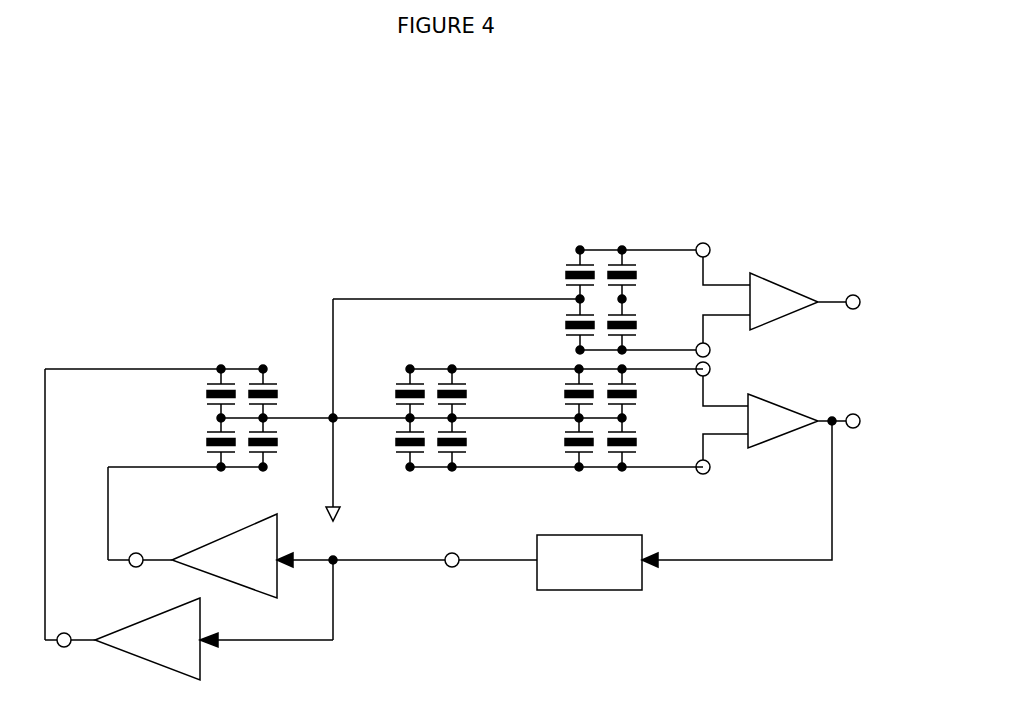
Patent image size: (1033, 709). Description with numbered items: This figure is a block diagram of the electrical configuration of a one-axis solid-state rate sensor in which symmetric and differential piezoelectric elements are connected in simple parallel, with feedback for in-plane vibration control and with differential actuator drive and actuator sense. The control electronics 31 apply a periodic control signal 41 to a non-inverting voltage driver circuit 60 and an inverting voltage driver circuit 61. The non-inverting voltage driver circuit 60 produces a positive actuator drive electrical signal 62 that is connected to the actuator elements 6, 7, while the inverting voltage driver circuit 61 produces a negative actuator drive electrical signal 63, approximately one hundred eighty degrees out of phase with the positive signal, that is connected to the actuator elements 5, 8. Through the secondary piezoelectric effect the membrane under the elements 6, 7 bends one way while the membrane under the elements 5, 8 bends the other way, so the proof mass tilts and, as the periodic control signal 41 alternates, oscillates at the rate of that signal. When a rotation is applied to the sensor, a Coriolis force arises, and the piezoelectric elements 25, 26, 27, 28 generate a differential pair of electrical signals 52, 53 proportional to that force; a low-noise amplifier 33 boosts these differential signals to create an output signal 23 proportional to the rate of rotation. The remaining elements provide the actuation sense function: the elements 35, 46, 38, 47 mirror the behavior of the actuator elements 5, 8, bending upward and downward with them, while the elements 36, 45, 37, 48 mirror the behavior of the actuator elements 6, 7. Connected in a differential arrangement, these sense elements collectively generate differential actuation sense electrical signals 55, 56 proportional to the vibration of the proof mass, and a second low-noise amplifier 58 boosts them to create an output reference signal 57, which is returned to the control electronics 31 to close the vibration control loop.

The actuator element 5 is at (205, 390).
The actuator element 6 is at (205, 440).
The actuator element 7 is at (278, 443).
The actuator element 8 is at (278, 395).
The output signal 23 is at (858, 290).
The piezoelectric element 25 is at (566, 274).
The piezoelectric element 26 is at (566, 324).
The piezoelectric element 27 is at (637, 325).
The piezoelectric element 28 is at (637, 275).
The control electronics 31 is at (592, 580).
The low-noise amplifier 33 is at (772, 284).
The actuation sense element 35 is at (394, 393).
The actuation sense element 36 is at (394, 441).
The actuation sense element 37 is at (565, 440).
The actuation sense element 38 is at (565, 392).
The periodic control signal 41 is at (448, 565).
The actuation sense element 45 is at (467, 441).
The actuation sense element 46 is at (467, 393).
The actuation sense element 47 is at (637, 393).
The actuation sense element 48 is at (637, 441).
The differential electrical signal 52 is at (709, 246).
The differential electrical signal 53 is at (710, 350).
The differential actuation sense electrical signal 55 is at (710, 368).
The differential actuation sense electrical signal 56 is at (710, 470).
The output reference signal 57 is at (858, 410).
The low-noise amplifier 58 is at (765, 405).
The non-inverting voltage driver circuit 60 is at (255, 535).
The inverting voltage driver circuit 61 is at (177, 668).
The positive actuator drive electrical signal 62 is at (142, 550).
The negative actuator drive electrical signal 63 is at (70, 632).